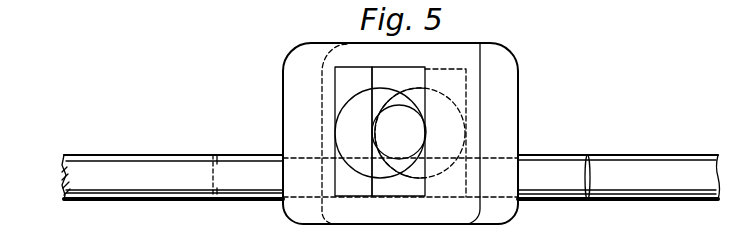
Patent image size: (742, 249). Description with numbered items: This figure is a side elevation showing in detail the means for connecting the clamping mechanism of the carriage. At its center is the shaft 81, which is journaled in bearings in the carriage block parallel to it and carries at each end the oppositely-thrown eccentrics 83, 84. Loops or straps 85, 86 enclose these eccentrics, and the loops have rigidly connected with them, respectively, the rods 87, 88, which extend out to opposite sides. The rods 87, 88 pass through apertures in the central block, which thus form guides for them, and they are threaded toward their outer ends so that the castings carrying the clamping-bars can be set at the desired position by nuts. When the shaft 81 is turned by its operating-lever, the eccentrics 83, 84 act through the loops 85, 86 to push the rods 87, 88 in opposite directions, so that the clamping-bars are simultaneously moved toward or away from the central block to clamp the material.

The shaft 81 is at (399, 132).
The eccentric 83 is at (358, 98).
The eccentric 84 is at (415, 94).
The loop or strap 85 is at (512, 69).
The loop or strap 86 is at (287, 91).
The rod 87 is at (627, 160).
The rod 88 is at (165, 158).